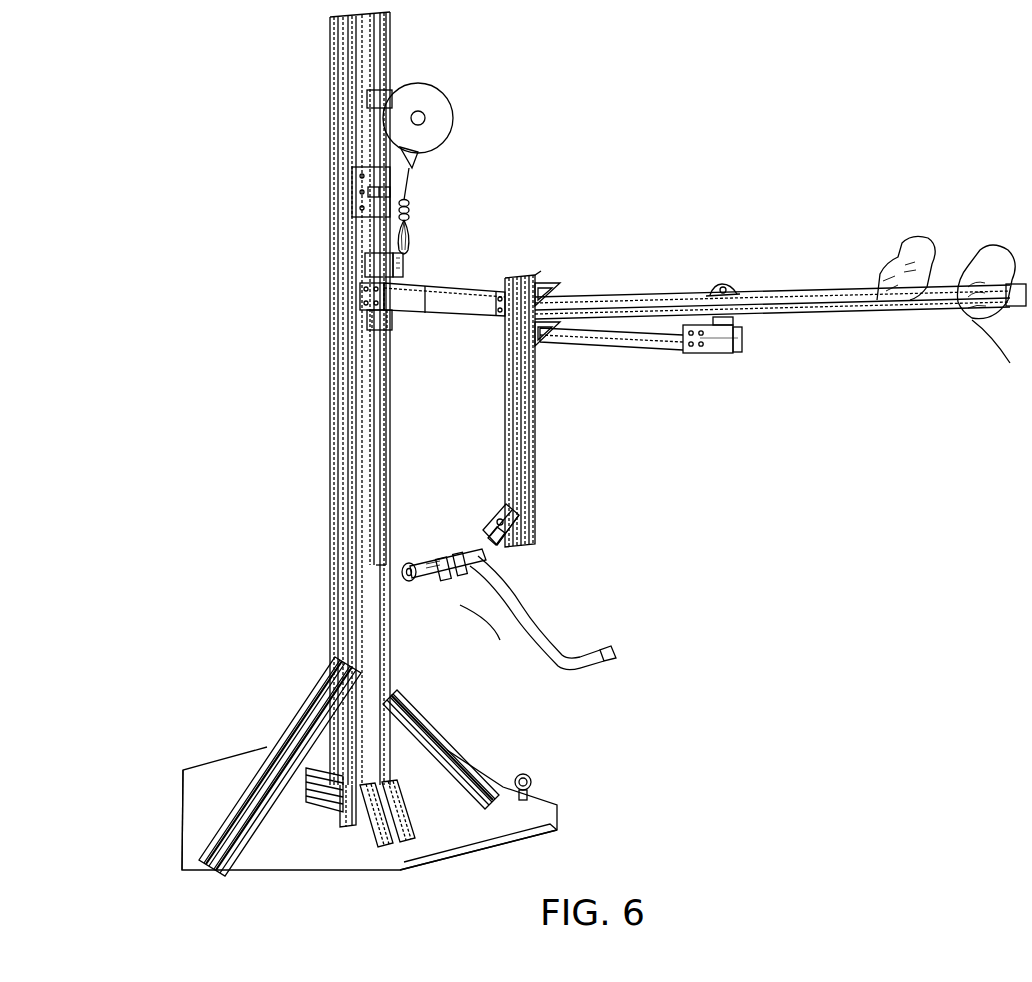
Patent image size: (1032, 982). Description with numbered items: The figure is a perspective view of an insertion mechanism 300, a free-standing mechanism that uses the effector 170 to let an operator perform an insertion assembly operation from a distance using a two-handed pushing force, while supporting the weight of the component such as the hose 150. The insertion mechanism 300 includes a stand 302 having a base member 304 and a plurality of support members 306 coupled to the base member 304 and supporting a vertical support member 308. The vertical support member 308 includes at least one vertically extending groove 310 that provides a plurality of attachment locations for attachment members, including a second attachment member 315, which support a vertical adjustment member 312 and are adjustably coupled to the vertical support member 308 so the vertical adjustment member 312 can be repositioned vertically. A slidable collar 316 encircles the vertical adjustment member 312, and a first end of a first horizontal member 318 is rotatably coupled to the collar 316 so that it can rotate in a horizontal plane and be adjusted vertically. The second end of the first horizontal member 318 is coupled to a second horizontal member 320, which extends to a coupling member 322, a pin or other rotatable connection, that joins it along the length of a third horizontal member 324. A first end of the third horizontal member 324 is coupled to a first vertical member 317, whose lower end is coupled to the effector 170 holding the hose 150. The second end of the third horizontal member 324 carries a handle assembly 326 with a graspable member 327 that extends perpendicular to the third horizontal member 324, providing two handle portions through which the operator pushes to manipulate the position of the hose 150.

The insertion mechanism 300 is at (222, 56).
The stand 302 is at (200, 770).
The base member 304 is at (430, 822).
The support member 306 is at (293, 717).
The vertical support member 308 is at (352, 352).
The vertically extending groove 310 is at (372, 628).
The vertical adjustment member 312 is at (380, 410).
The second attachment member 315 is at (355, 180).
The slidable collar 316 is at (372, 258).
The first vertical member 317 is at (523, 455).
The first horizontal member 318 is at (375, 292).
The second horizontal member 320 is at (652, 332).
The coupling member 322 is at (727, 284).
The third horizontal member 324 is at (630, 300).
The handle assembly 326 is at (972, 320).
The graspable member 327 is at (964, 298).
The hose 150 is at (512, 603).
The effector 170 is at (460, 605).